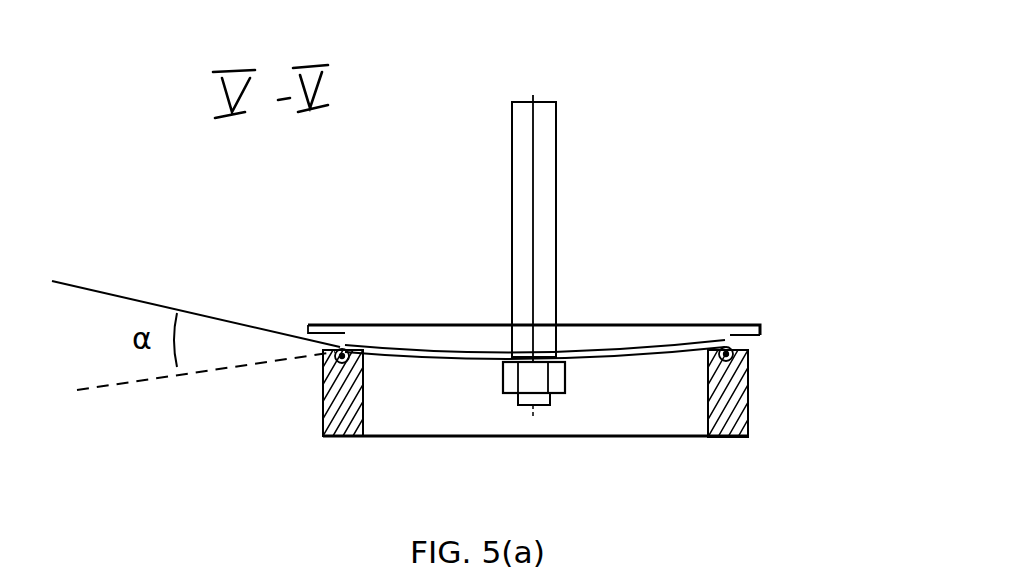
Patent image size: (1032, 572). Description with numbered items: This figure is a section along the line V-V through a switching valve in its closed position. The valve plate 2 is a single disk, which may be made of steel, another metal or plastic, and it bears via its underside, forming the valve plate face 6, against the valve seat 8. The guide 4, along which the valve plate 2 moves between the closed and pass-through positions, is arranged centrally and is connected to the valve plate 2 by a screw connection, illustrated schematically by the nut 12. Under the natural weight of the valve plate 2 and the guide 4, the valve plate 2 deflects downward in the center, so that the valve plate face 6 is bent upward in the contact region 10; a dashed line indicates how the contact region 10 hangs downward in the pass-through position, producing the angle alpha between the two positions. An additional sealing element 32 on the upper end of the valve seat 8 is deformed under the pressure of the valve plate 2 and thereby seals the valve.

The valve plate 2 is at (555, 108).
The guide 4 is at (536, 180).
The valve plate face 6 is at (413, 356).
The valve seat 8 is at (740, 413).
The contact region 10 is at (740, 350).
The nut 12 is at (580, 357).
The sealing element 32 is at (332, 356).